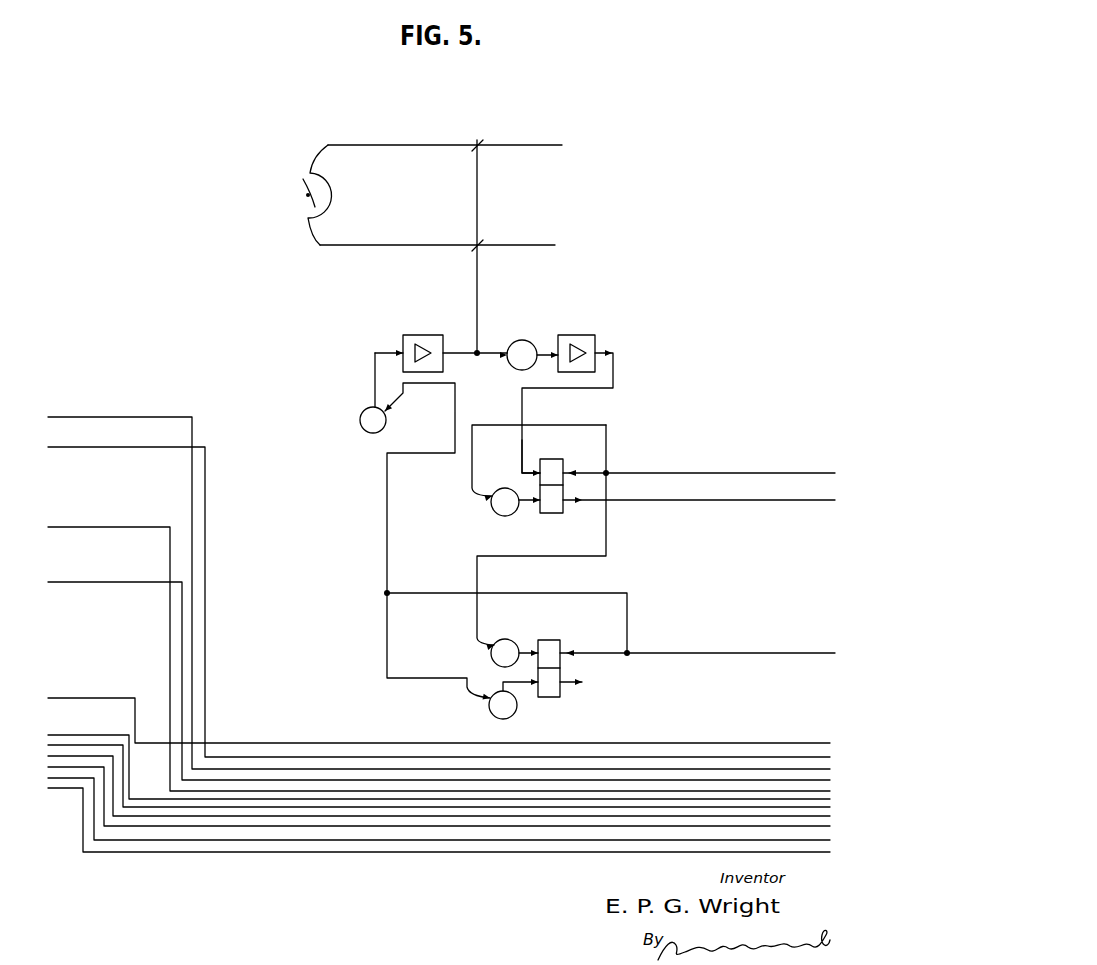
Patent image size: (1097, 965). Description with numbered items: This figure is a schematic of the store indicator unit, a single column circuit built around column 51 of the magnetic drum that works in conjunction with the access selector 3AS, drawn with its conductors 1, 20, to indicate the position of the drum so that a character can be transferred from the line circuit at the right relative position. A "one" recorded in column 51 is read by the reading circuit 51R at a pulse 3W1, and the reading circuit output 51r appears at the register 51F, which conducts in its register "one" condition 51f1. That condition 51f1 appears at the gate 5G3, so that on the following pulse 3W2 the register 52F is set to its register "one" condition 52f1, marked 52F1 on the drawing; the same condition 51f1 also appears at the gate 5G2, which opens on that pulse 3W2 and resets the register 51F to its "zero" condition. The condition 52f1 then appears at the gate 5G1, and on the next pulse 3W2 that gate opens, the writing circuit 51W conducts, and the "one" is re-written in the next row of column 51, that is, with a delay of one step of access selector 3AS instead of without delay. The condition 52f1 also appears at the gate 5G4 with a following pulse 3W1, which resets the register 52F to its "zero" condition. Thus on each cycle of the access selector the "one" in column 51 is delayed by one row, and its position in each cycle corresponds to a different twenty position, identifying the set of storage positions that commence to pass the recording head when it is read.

The access selector 3AS is at (297, 191).
The conductor 1 is at (443, 135).
The conductor 20 is at (436, 258).
The column 51 is at (477, 239).
The writing circuit 51W is at (441, 343).
The pulse 3W1 is at (522, 340).
The reading circuit 51R is at (567, 395).
The gate 5G1 is at (353, 393).
The register "1" condition 52F1 is at (419, 489).
The pulse 3W2 is at (387, 423).
The register 51F is at (687, 477).
The reading circuit output 51r is at (514, 462).
The register "1" condition 51f1 is at (518, 537).
The gate 5G2 is at (515, 515).
The gate 5G3 is at (514, 645).
The register 52F is at (611, 645).
The register "1" condition 52f1 is at (438, 647).
The gate 5G4 is at (513, 709).